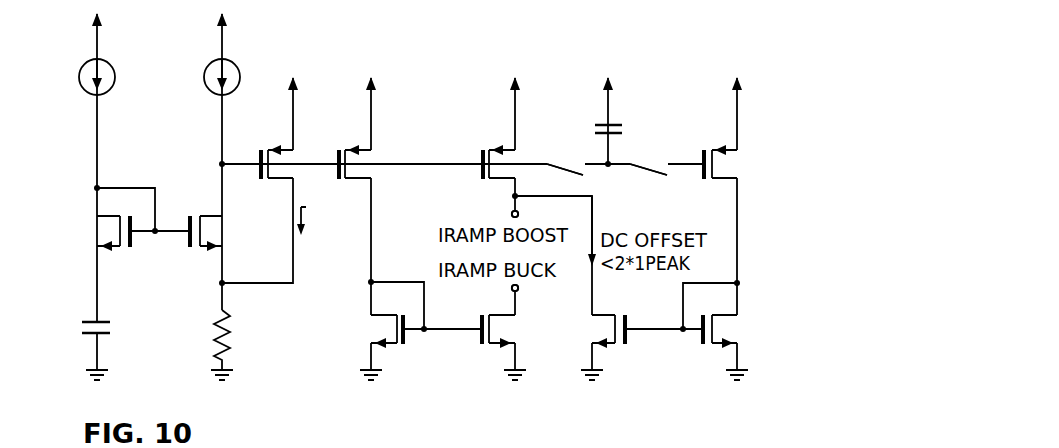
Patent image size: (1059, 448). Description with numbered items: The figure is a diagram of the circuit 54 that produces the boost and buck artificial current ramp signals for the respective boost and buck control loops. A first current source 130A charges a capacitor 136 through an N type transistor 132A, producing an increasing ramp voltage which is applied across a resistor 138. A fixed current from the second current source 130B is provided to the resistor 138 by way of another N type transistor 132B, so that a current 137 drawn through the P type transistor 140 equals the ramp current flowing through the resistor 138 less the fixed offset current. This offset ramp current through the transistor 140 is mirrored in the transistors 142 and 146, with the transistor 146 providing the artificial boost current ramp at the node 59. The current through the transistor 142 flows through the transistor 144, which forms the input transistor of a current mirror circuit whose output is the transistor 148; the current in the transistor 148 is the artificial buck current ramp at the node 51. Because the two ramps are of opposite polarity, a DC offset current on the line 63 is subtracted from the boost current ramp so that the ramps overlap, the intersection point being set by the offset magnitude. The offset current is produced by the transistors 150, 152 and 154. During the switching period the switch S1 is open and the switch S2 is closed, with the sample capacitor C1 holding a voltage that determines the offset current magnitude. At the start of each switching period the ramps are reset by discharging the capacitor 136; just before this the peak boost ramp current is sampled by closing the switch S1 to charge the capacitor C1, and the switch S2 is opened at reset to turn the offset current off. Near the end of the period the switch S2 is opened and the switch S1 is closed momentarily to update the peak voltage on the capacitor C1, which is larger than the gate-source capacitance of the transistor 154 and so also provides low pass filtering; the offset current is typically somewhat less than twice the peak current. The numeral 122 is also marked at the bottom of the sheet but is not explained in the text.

The circuit 54 is at (61, 180).
The first current source 130A is at (115, 71).
The current source 130B is at (240, 71).
The N type transistor 132A is at (112, 228).
The N type transistor 132B is at (208, 230).
The capacitor 136 is at (100, 322).
The resistor 138 is at (228, 313).
The P type transistor 140 is at (249, 152).
The transistor 142 is at (328, 152).
The transistor 146 is at (470, 152).
The transistor 154 is at (720, 165).
The current 137 is at (306, 214).
The switch S1 is at (573, 160).
The switch S2 is at (659, 160).
The sample capacitor C1 is at (616, 114).
The node 59 is at (511, 186).
The line 63 is at (594, 204).
The node 51 is at (511, 291).
The transistor 144 is at (393, 329).
The transistor 148 is at (497, 329).
The transistor 150 is at (612, 329).
The transistor 152 is at (720, 329).
The buffer 122 is at (502, 436).